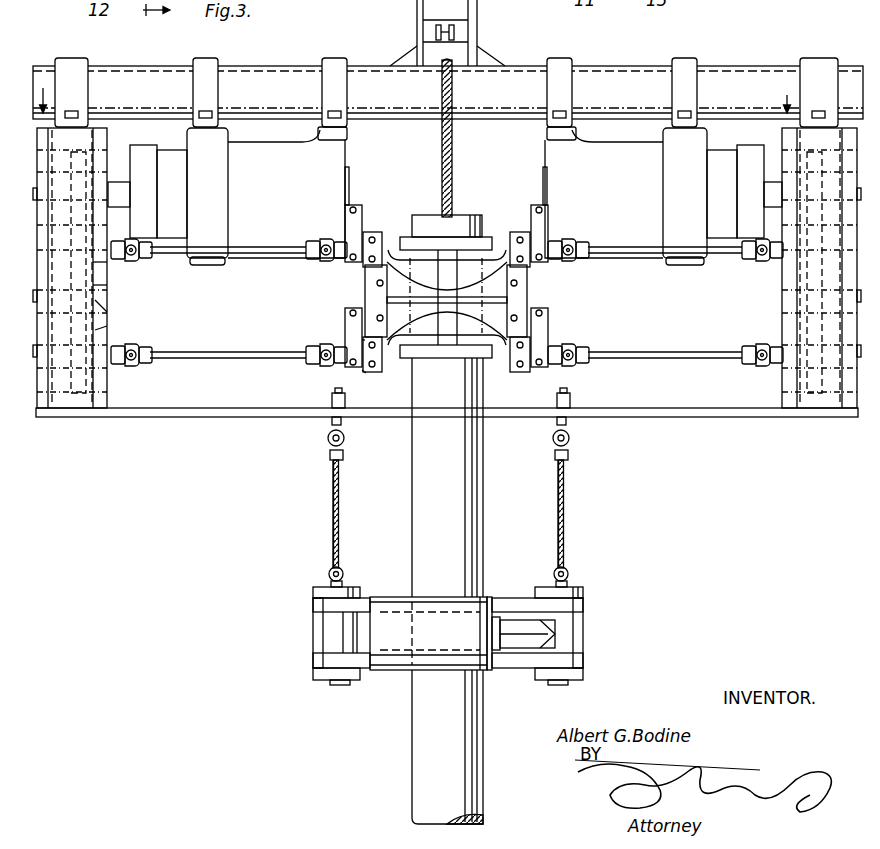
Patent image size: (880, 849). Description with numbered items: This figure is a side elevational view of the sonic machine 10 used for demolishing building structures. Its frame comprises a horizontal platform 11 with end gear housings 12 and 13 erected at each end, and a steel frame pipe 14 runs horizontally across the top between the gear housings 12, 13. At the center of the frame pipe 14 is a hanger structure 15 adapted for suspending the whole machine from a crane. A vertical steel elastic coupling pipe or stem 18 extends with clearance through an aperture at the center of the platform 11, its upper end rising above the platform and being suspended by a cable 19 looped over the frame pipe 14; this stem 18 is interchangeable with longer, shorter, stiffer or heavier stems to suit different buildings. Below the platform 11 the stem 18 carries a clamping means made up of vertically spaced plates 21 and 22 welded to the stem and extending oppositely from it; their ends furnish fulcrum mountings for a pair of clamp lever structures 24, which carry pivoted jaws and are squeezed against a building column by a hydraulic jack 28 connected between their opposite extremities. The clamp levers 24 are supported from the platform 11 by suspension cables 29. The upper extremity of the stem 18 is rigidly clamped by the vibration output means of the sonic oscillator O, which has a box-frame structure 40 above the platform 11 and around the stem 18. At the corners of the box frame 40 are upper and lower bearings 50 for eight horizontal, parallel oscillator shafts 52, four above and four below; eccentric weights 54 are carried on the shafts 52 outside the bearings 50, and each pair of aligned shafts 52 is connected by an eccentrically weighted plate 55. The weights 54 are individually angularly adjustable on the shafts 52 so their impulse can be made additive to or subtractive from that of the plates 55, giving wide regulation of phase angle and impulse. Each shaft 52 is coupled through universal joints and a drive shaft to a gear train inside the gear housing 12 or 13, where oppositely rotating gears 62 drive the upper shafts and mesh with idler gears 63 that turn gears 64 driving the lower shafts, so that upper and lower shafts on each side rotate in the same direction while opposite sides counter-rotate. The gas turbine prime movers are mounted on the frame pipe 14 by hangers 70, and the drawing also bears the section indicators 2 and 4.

The section line 2- 2 is at (413, 91).
The section line 4- 4 is at (148, 9).
The sonic machine 10 is at (190, 427).
The platform 11 is at (663, 418).
The end gear housing 12 is at (42, 409).
The end gear housing 13 is at (823, 291).
The steel pipe 14 is at (266, 70).
The hanger structure 15 is at (477, 31).
The vertical steel elastic coupling pipe or stem 18 is at (484, 509).
The cable 19 is at (453, 163).
The plate 21 is at (312, 610).
The plate 22 is at (312, 663).
The clamp lever structures 24 is at (312, 593).
The hydraulic jack 28 is at (397, 672).
The suspension cables 29 is at (332, 508).
The box-frame structure 40 is at (364, 284).
The upper and lower bearings 50 is at (370, 232).
The oscillator shafts 52 is at (366, 374).
The eccentric weights 54 is at (346, 222).
The eccentrically weighted plate 55 is at (453, 236).
The oppositely rotating gears 62 is at (108, 273).
The idler gears 63 is at (110, 308).
The gears 64 is at (110, 328).
The hangers 70 is at (204, 61).
The sonic oscillator O is at (329, 382).